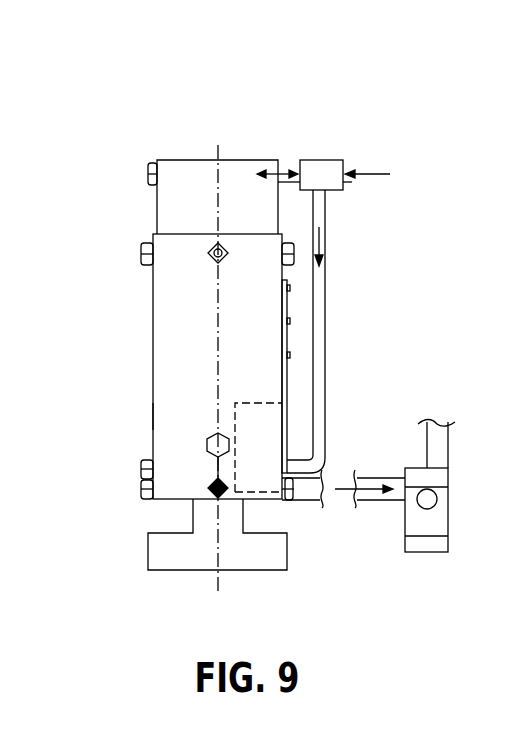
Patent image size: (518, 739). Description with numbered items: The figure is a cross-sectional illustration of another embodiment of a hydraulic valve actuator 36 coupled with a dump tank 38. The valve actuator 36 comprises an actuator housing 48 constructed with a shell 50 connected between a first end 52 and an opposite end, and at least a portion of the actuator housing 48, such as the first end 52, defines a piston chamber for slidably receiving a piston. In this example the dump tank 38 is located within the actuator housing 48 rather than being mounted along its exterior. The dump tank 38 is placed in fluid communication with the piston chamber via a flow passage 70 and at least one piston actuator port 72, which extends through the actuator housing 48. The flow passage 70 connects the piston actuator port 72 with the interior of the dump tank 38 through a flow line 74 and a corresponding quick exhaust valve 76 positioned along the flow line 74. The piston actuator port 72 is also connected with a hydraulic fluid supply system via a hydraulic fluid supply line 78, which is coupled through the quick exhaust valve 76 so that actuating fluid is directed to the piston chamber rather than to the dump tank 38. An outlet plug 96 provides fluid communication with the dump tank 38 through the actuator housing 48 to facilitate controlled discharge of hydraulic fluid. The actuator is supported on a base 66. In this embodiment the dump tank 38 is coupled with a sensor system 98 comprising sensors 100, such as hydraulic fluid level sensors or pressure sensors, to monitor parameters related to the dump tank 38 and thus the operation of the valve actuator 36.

The valve actuator 36 is at (130, 312).
The dump tank 38 is at (256, 403).
The actuator housing 48 is at (150, 368).
The shell 50 is at (165, 403).
The first end 52 is at (165, 198).
The base 66 is at (148, 552).
The flow passage 70 is at (320, 245).
The piston actuator port 72 is at (282, 165).
The flow line 74 is at (325, 302).
The quick exhaust valve 76 is at (322, 160).
The hydraulic fluid supply line 78 is at (352, 163).
The outlet plug 96 is at (289, 500).
The sensor system 98 is at (390, 508).
The sensor 100 is at (427, 505).